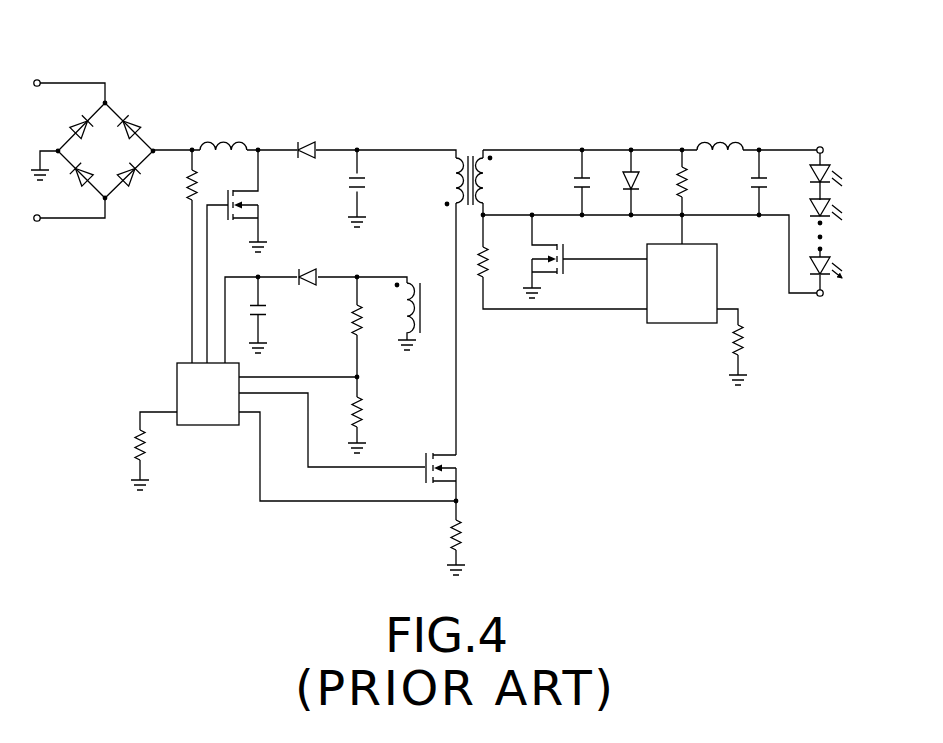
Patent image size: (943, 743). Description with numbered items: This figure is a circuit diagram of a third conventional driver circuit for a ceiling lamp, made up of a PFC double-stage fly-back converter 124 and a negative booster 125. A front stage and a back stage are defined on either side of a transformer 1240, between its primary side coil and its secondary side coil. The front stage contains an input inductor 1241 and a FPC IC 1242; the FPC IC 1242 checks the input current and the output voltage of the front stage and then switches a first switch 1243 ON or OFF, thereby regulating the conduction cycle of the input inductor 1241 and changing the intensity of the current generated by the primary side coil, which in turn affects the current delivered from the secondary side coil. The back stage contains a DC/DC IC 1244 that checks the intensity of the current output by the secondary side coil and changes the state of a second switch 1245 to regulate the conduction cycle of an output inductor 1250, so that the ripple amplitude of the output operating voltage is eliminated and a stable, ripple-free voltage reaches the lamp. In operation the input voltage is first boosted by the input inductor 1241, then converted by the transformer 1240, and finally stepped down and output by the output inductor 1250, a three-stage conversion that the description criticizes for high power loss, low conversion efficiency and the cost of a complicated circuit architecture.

The PFC double-stage fly-back converter 124 is at (513, 93).
The negative booster 125 is at (612, 93).
The transformer 1240 is at (462, 148).
The input inductor 1241 is at (201, 139).
The FPC IC 1242 is at (176, 377).
The first switch 1243 is at (249, 189).
The DC/DC IC 1244 is at (661, 244).
The second switch 1245 is at (548, 243).
The output inductor 1250 is at (743, 138).